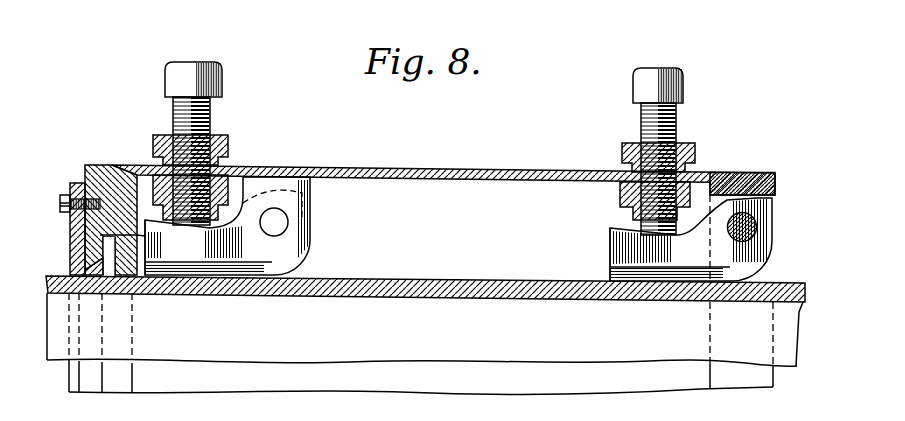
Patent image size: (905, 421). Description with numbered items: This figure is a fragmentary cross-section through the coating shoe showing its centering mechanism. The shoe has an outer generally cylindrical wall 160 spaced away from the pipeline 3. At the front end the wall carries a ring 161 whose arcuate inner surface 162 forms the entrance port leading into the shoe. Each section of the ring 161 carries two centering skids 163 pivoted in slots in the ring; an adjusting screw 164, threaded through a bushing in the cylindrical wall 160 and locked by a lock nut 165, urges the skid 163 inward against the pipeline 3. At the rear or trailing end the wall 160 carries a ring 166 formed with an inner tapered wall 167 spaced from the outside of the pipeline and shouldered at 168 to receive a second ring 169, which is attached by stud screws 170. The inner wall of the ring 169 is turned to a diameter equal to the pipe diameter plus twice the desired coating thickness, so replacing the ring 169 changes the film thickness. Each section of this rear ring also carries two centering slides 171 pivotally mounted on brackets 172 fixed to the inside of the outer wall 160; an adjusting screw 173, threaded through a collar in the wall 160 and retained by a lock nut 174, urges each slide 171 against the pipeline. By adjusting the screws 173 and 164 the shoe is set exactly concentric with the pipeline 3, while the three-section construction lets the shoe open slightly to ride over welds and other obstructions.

The pipeline 3 is at (430, 277).
The outer cylindrical wall 160 is at (445, 167).
The ring 161 is at (777, 177).
The arcuate inner surface 162 is at (775, 238).
The centering skid 163 is at (612, 247).
The adjusting screw 164 is at (683, 83).
The lock nut 165 is at (683, 140).
The ring 166 is at (100, 165).
The inner tapered wall 167 is at (113, 238).
The shoulder 168 is at (133, 235).
The second ring 169 is at (72, 253).
The stud screw 170 is at (63, 193).
The centering slide 171 is at (245, 252).
The bracket 172 is at (310, 185).
The adjusting screw 173 is at (212, 83).
The lock nut 174 is at (222, 138).